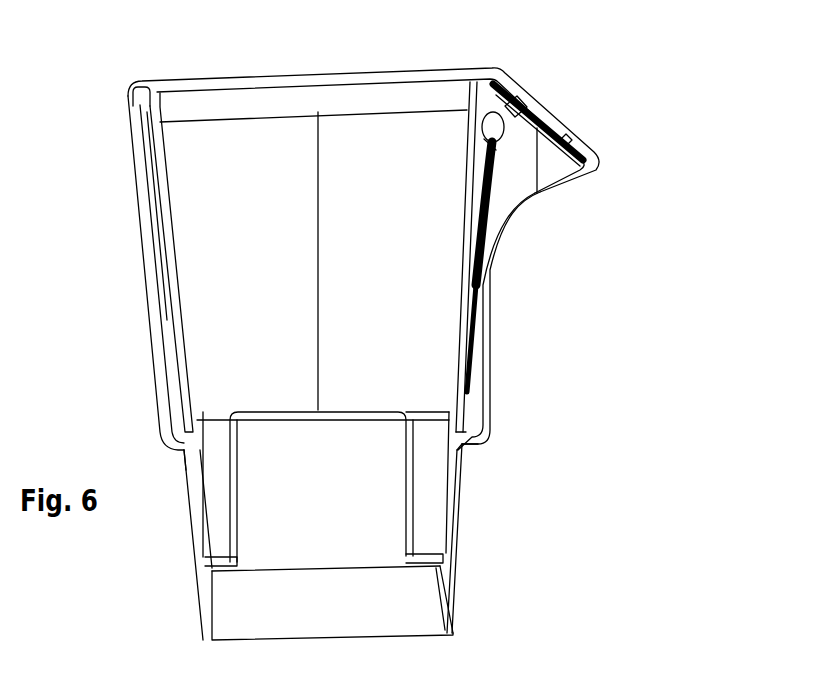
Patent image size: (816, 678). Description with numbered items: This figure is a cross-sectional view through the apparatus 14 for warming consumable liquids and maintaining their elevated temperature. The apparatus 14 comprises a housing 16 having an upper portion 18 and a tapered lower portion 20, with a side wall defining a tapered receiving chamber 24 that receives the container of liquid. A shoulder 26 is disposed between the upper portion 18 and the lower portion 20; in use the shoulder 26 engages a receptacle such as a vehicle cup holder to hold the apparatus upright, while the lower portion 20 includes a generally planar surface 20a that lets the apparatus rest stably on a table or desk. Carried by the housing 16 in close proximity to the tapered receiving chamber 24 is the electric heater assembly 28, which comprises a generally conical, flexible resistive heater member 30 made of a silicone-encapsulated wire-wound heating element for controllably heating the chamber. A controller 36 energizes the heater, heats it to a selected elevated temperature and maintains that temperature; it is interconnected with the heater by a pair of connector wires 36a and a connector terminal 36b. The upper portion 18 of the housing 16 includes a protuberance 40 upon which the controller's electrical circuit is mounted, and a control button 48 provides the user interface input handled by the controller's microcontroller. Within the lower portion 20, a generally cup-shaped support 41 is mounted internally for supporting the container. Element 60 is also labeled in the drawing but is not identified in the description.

The apparatus 14 is at (332, 622).
The housing 16 is at (140, 248).
The upper portion 18 is at (128, 135).
The tapered lower portion 20 is at (455, 593).
The planar surface 20a is at (204, 641).
The tapered receiving chamber 24 is at (429, 152).
The shoulder 26 is at (475, 447).
The electric heater assembly 28 is at (458, 300).
The flexible resistive heater member 30 is at (354, 261).
The controller 36 is at (560, 109).
The connector wires 36a is at (463, 195).
The connector terminal 36b is at (477, 377).
The protuberance 40 is at (558, 196).
The cup-shaped support 41 is at (227, 508).
The control button 48 is at (578, 130).
The base element 60 is at (494, 622).